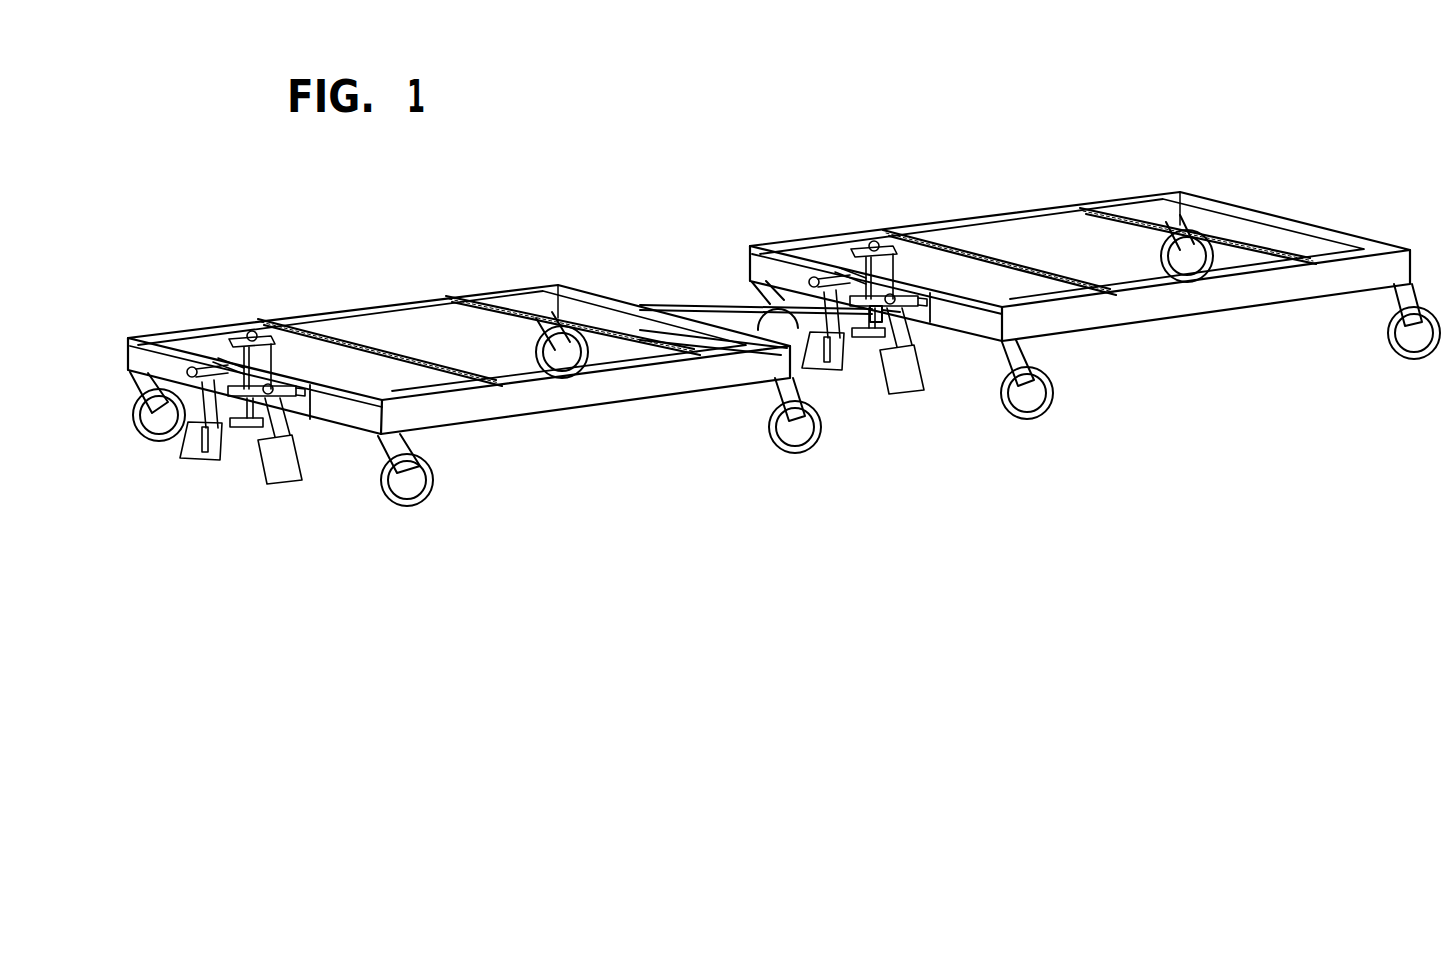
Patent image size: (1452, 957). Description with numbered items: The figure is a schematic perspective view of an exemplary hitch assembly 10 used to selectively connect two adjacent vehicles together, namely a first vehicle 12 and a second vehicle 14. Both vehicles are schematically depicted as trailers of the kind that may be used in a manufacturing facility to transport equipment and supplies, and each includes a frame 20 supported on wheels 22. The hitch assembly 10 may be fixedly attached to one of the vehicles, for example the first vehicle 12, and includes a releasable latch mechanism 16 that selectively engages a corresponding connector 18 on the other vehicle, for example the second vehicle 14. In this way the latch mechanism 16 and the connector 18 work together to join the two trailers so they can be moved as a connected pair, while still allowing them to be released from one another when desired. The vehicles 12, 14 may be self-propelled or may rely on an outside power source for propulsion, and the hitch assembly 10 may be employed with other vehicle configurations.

The hitch assembly 10 is at (835, 257).
The first vehicle 12 is at (1108, 196).
The second vehicle 14 is at (342, 315).
The releasable latch mechanism 16 is at (920, 337).
The connector 18 is at (713, 305).
The frame 20 is at (576, 292).
The wheels 22 is at (1416, 352).